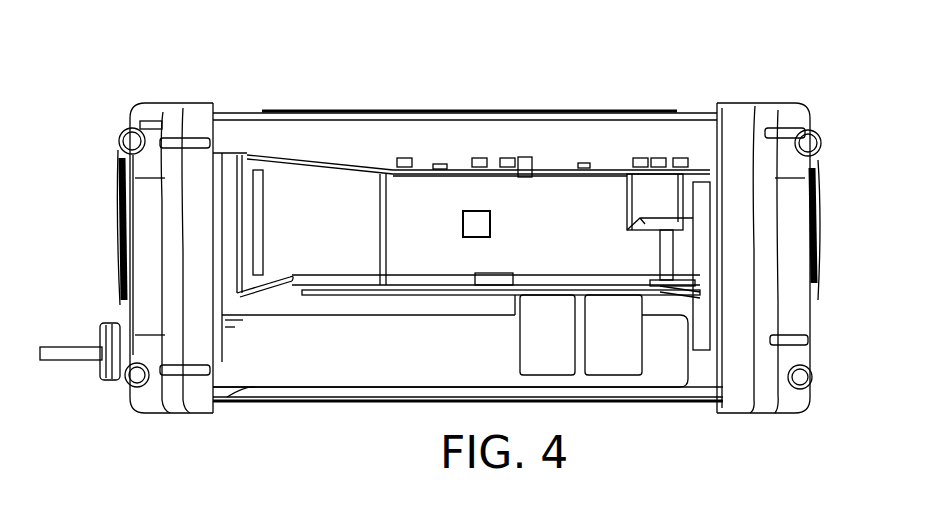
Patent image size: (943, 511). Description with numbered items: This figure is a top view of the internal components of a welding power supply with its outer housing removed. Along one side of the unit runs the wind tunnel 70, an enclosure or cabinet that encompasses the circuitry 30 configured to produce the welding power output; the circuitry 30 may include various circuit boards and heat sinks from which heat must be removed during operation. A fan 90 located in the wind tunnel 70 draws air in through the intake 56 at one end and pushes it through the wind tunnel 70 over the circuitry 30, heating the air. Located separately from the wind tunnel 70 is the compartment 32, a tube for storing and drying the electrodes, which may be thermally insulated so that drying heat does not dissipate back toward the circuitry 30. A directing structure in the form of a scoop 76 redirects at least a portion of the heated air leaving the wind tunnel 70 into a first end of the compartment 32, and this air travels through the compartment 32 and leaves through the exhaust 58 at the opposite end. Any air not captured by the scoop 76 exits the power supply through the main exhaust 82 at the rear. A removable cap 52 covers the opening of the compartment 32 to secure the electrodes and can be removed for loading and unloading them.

The circuitry 30 is at (463, 222).
The compartment 32 is at (362, 358).
The removable cap 52 is at (103, 370).
The intake 56 is at (117, 225).
The exhaust 58 is at (230, 402).
The wind tunnel 70 is at (537, 201).
The scoop 76 is at (698, 173).
The main exhaust 82 is at (822, 207).
The fan 90 is at (267, 177).